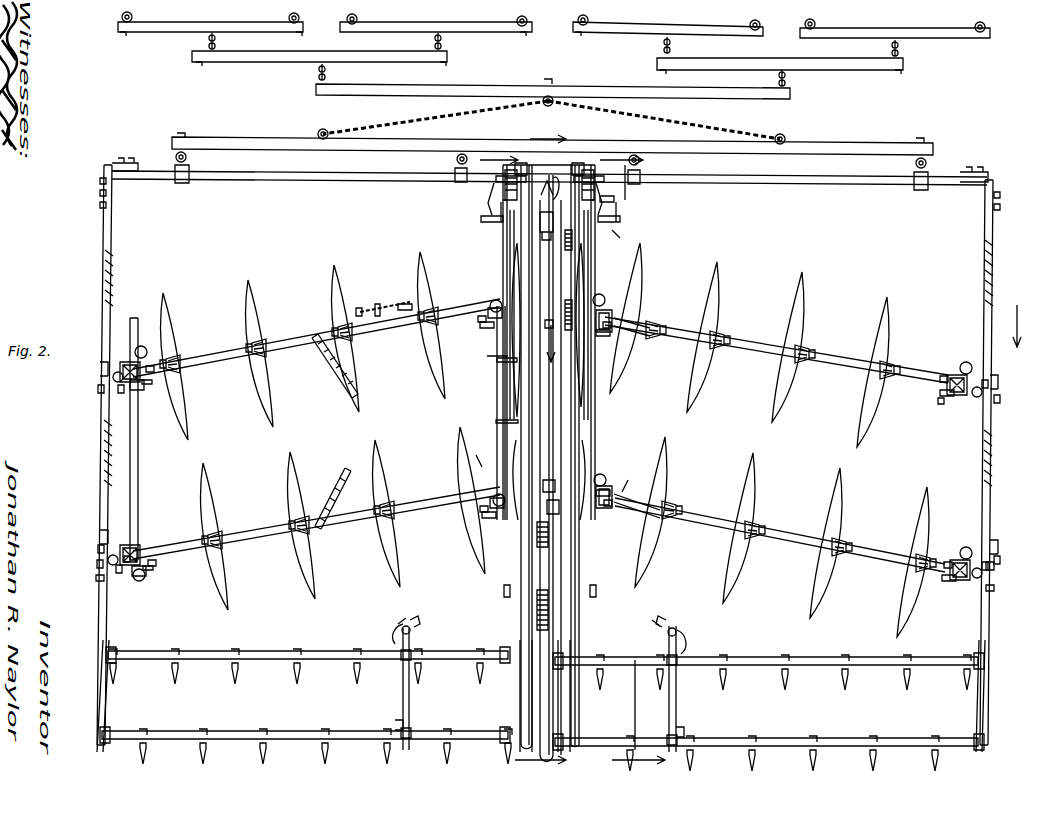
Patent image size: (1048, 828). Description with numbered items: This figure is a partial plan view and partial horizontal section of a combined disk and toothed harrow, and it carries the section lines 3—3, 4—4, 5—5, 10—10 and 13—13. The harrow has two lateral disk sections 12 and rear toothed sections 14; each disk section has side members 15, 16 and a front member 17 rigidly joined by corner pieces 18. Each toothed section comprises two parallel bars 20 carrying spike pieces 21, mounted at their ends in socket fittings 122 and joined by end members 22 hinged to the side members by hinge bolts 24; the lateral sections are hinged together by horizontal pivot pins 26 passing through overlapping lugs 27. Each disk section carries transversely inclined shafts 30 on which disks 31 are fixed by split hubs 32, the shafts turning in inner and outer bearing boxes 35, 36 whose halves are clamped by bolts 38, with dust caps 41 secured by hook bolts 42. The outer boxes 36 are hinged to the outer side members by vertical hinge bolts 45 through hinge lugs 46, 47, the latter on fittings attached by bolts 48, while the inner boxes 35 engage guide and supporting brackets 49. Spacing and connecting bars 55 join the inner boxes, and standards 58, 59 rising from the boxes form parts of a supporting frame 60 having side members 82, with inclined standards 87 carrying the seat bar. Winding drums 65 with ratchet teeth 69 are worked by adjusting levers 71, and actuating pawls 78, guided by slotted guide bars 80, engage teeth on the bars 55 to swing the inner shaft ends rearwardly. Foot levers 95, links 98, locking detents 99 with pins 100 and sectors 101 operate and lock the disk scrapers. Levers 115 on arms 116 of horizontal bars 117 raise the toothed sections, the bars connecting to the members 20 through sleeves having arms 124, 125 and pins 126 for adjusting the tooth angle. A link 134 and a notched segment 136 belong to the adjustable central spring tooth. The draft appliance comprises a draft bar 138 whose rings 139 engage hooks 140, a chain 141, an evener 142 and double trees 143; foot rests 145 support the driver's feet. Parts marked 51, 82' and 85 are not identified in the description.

The section line 3— 3 is at (540, 451).
The section line 4— 4 is at (632, 470).
The section line 5— 5 is at (790, 333).
The section line 10— 10 is at (490, 259).
The lateral disk section 12 is at (94, 217).
The section line 13— 13 is at (552, 470).
The rear toothed section 14 is at (241, 740).
The side member 15 is at (104, 236).
The side member 16 is at (530, 545).
The front member 17 is at (250, 176).
The corner piece 18 is at (108, 160).
The tooth carrying bar 20 is at (316, 662).
The spike piece 21 is at (205, 748).
The end member 22 is at (104, 688).
The hinge bolt 24 is at (506, 597).
The horizontal pivot pin 26 is at (515, 535).
The overlapping lug 27 is at (560, 510).
The disk shaft 30 is at (748, 352).
The disk 31 is at (268, 286).
The split hub 32 is at (648, 340).
The inner bearing box 35 is at (612, 312).
The outer bearing box 36 is at (127, 360).
The clamping bolt 38 is at (140, 350).
The dust guard 41 is at (152, 370).
The hook bolt 42 is at (152, 365).
The vertical hinge bolt 45 is at (104, 380).
The hinge lug 46 is at (120, 394).
The hinge lug 47 is at (112, 370).
The bolt 48 is at (98, 386).
The guide and supporting bracket 49 is at (513, 300).
The pivot 51 is at (556, 316).
The spacing and connecting bar 55 is at (508, 368).
The standard 58 is at (640, 322).
The standard 59 is at (126, 554).
The supporting frame 60 is at (147, 506).
The winding drum 65 is at (616, 199).
The ratchet teeth 69 is at (496, 165).
The adjusting lever 71 is at (504, 186).
The actuating pawl 78 is at (512, 240).
The slotted guide bar 80 is at (498, 418).
The side member of supporting frame 82 is at (316, 429).
The gang frame upright 82' is at (317, 433).
The bearing 85 is at (150, 392).
The seat standard 87 is at (346, 466).
The foot lever 95 is at (406, 306).
The link 98 is at (352, 372).
The locking detent 99 is at (380, 305).
The pin 100 is at (358, 310).
The sector 101 is at (372, 308).
The lever 115 is at (428, 620).
The upwardly extending arm 116 is at (402, 622).
The horizontal bar 117 is at (404, 690).
The socket fitting 122 is at (112, 650).
The sleeve arm 124 is at (420, 674).
The curved arm 125 is at (412, 634).
The pin 126 is at (396, 642).
The link 134 is at (547, 519).
The notched segment 136 is at (604, 262).
The draft bar 138 is at (842, 147).
The ring 139 is at (176, 155).
The hook 140 is at (190, 174).
The chain 141 is at (438, 120).
The evener 142 is at (606, 90).
The double tree 143 is at (290, 62).
The foot rest 145 is at (484, 218).